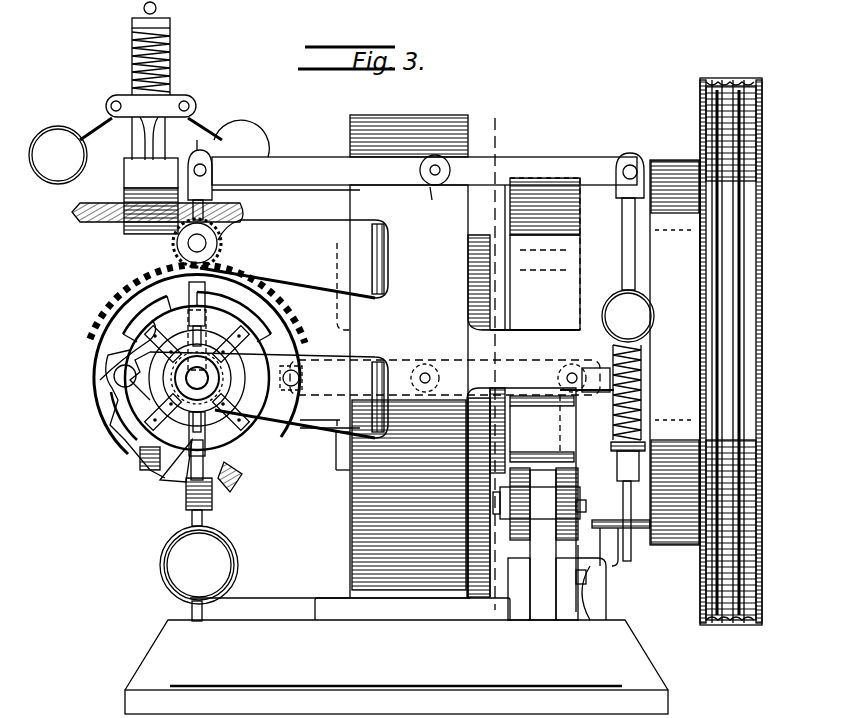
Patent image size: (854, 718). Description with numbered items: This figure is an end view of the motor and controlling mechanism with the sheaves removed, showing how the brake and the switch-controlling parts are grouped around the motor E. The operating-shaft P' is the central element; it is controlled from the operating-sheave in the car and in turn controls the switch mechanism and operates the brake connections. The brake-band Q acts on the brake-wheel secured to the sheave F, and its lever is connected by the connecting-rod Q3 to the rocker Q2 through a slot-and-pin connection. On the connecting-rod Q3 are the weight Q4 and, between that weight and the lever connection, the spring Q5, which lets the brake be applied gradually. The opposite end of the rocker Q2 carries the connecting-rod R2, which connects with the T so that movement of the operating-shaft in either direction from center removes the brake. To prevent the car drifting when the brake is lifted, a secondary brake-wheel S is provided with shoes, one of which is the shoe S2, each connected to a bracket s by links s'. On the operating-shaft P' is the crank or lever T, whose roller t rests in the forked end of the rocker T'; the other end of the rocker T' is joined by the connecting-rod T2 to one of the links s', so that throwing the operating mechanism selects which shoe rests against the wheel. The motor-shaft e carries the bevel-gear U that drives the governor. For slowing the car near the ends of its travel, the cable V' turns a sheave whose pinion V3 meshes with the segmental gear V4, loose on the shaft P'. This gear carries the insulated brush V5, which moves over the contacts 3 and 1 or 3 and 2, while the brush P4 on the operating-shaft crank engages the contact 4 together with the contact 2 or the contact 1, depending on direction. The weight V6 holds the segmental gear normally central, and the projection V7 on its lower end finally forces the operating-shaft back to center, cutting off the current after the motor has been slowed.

The motor E is at (409, 121).
The contact 1 is at (492, 353).
The rocker Q2 is at (563, 163).
The brake-band Q is at (672, 172).
The connecting-rod Q3 is at (634, 270).
The weight Q4 is at (646, 310).
The spring Q5 is at (642, 382).
The sheave F is at (700, 113).
The motor-shaft e is at (587, 339).
The secondary brake-wheel S is at (524, 254).
The brake-shoe S2 is at (538, 456).
The bracket s is at (539, 544).
The link s' is at (557, 582).
The crank or lever T is at (269, 413).
The rocker T' is at (445, 362).
The connecting-rod T2 is at (580, 448).
The roller t is at (304, 378).
The operating-shaft P' is at (208, 378).
The contact 2 is at (165, 372).
The contact 3 is at (190, 330).
The contact 4 is at (112, 521).
The segmental gear V4 is at (118, 292).
The brush V5 is at (150, 372).
The projection V7 is at (112, 406).
The pinion V3 is at (215, 258).
The cable V' is at (157, 198).
The connecting-rod R2 is at (240, 252).
The brush P4 is at (195, 448).
The bevel-gear U is at (240, 482).
The weight V6 is at (224, 545).